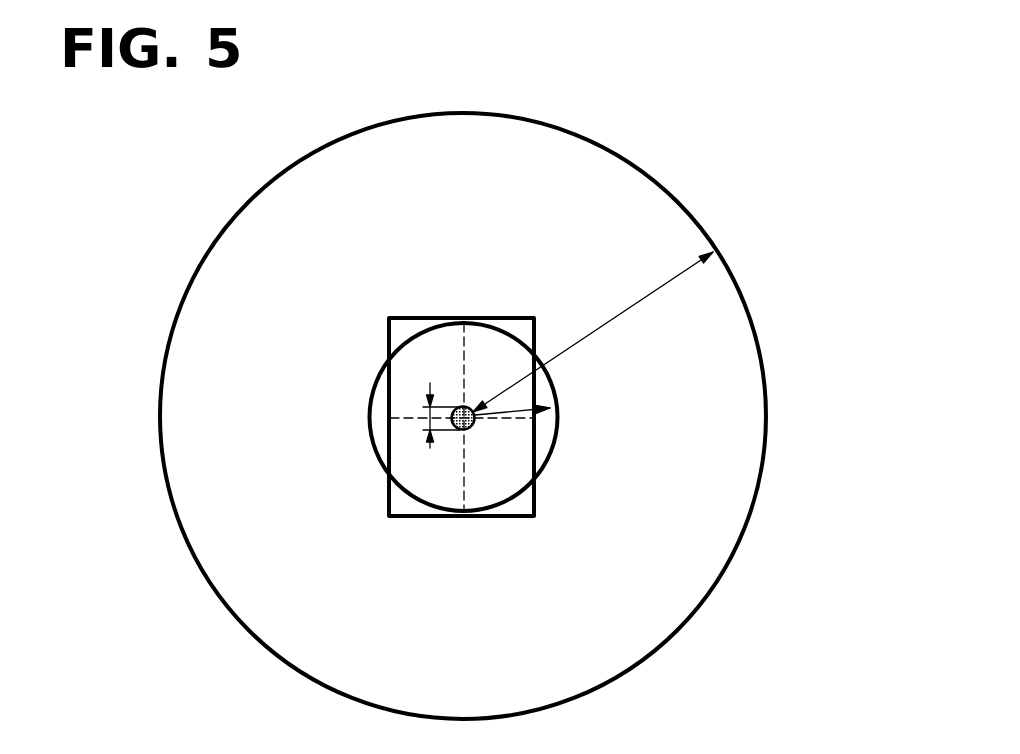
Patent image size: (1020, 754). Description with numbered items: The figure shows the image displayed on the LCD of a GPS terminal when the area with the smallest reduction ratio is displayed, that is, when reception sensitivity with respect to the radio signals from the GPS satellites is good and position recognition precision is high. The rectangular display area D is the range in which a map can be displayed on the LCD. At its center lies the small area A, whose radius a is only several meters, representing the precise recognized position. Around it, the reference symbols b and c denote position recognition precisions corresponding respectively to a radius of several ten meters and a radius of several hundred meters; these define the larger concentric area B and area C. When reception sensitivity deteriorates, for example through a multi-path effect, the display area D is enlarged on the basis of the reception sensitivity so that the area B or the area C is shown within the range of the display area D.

The area A is at (462, 405).
The area B is at (545, 460).
The area C is at (620, 155).
The display area D is at (413, 517).
The radius a is at (427, 420).
The position recognition precision b is at (514, 408).
The position recognition precision c is at (633, 306).